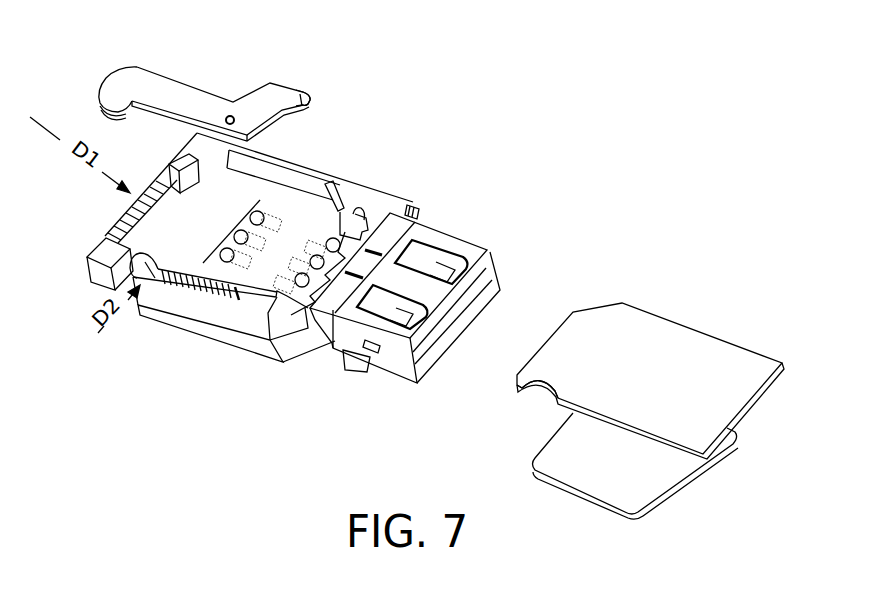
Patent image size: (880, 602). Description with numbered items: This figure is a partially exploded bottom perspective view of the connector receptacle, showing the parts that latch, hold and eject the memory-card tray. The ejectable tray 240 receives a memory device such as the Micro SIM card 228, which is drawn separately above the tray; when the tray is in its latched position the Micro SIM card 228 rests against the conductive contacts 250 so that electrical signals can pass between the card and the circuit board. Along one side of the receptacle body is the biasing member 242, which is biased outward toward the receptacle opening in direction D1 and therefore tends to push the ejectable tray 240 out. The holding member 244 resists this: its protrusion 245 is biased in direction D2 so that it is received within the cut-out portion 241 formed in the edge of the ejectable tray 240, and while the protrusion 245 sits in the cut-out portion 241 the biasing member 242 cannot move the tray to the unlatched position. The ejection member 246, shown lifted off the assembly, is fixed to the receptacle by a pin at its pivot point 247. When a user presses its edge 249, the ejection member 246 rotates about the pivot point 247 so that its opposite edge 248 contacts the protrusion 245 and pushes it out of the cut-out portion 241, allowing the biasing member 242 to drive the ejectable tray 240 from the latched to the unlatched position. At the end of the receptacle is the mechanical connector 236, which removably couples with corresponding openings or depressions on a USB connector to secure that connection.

The Micro SIM card 228 is at (668, 485).
The mechanical connector 236 is at (441, 267).
The ejectable tray 240 is at (668, 353).
The cut-out portion 241 is at (540, 390).
The biasing member 242 is at (163, 207).
The holding member 244 is at (203, 287).
The protrusion 245 is at (160, 262).
The ejection member 246 is at (172, 77).
The pivot point 247 is at (231, 115).
The edge 248 is at (98, 100).
The edge 249 is at (307, 98).
The conductive contacts 250 is at (335, 237).